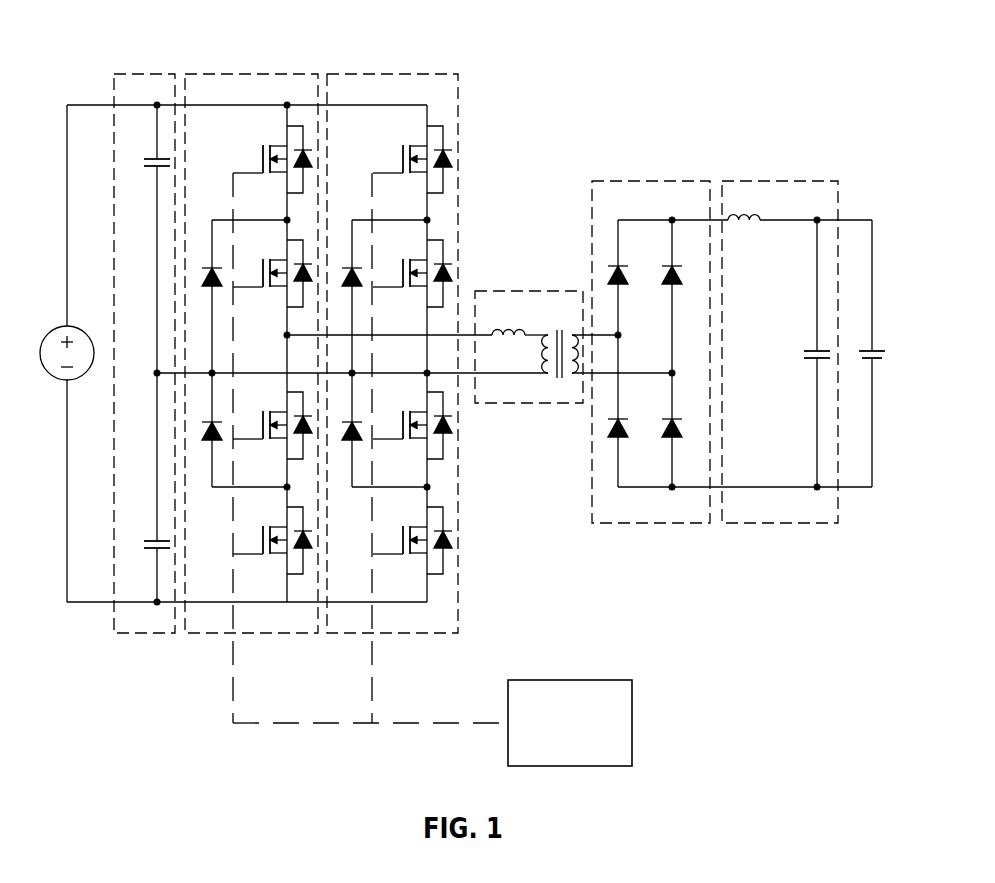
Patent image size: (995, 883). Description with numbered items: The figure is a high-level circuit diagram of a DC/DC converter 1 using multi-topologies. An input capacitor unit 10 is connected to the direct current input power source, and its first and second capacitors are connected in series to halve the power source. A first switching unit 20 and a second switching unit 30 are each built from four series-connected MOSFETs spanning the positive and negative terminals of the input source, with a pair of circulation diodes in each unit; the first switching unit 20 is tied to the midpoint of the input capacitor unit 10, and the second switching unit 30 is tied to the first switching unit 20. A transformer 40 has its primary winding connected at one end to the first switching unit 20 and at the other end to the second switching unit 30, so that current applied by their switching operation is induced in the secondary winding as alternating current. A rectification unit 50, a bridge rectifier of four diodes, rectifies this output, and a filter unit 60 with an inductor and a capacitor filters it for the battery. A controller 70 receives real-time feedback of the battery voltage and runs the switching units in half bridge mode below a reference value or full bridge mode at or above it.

The DC/DC converter 1 is at (514, 37).
The input capacitor unit 10 is at (139, 75).
The first switching unit 20 is at (282, 75).
The second switching unit 30 is at (431, 75).
The transformer 40 is at (532, 291).
The rectification unit 50 is at (684, 182).
The filter unit 60 is at (811, 182).
The controller 70 is at (612, 680).